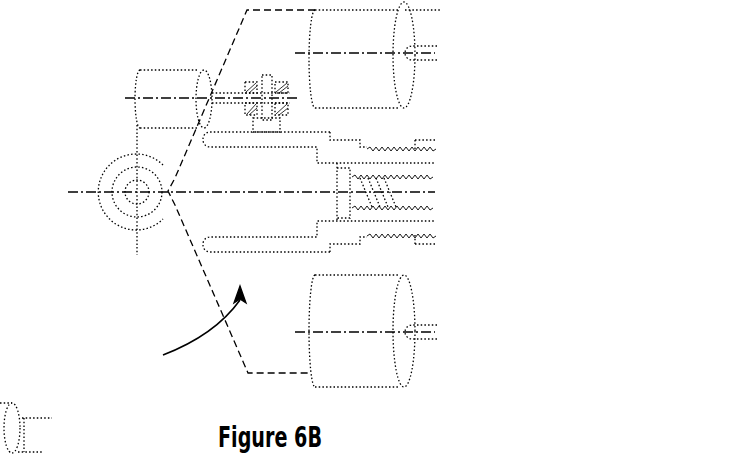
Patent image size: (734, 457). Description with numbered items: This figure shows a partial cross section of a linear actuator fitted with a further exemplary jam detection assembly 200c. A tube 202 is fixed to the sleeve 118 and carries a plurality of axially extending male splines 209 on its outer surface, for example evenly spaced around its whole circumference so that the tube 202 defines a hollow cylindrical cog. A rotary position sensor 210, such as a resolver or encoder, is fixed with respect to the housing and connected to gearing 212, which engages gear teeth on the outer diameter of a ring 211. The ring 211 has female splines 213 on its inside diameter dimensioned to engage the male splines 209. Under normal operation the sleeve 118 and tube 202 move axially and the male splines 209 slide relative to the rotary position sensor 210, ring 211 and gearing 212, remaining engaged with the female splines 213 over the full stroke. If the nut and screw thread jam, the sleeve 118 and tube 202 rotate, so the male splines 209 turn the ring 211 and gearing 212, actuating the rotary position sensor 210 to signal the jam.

The jam detection assembly 200c is at (210, 191).
The rotary position sensor 210 is at (167, 80).
The male splines 209 is at (240, 133).
The ring 211 is at (272, 130).
The gearing 212 is at (265, 78).
The female splines 213 is at (263, 133).
The tube 202 is at (227, 245).
The sleeve 118 is at (425, 158).